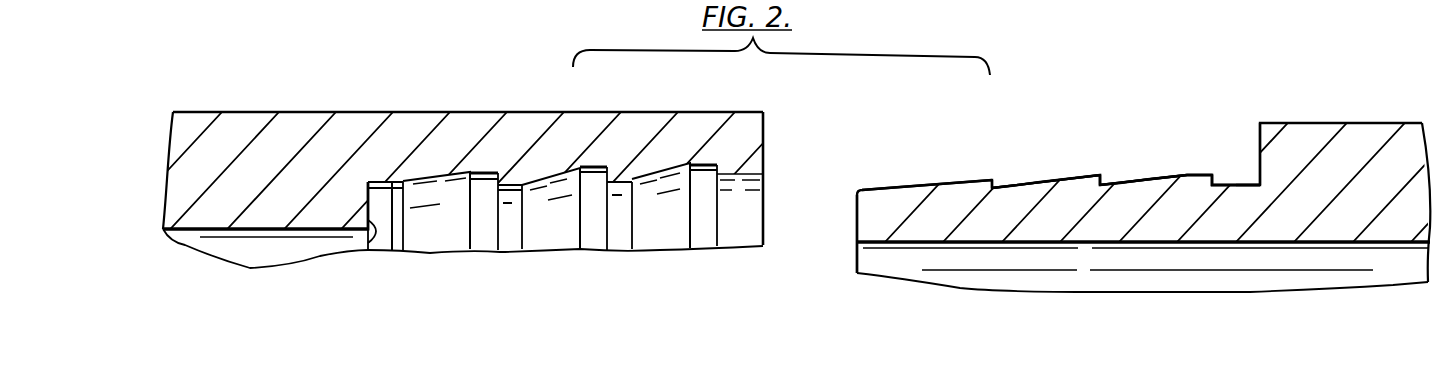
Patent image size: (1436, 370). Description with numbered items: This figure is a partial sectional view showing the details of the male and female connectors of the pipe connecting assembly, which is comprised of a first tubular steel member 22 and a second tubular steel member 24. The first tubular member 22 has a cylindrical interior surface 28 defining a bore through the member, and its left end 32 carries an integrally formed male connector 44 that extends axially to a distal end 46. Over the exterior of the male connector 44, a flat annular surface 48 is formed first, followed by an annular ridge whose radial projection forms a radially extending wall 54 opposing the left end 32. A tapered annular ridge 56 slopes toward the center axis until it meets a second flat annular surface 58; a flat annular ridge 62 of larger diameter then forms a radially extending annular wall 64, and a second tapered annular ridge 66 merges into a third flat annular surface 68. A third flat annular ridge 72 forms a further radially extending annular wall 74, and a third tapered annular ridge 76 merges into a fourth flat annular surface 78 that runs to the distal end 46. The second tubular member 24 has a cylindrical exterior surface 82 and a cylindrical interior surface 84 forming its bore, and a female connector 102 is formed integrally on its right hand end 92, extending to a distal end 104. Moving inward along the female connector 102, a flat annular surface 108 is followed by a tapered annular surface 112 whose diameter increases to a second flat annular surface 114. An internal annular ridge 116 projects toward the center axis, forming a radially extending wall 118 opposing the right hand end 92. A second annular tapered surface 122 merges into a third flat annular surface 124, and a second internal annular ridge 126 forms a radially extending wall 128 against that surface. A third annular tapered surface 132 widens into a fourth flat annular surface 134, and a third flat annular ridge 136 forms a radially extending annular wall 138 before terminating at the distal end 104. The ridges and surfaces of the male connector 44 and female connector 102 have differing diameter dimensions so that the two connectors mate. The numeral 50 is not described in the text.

The first tubular steel member 22 is at (1367, 123).
The second tubular steel member 24 is at (470, 162).
The cylindrical interior surface 28 is at (1345, 245).
The left end 32 is at (1256, 128).
The male connector 44 is at (1145, 118).
The distal end 46 is at (857, 220).
The flat annular surface 48 is at (1240, 183).
The land 50 is at (1198, 173).
The radially extending wall 54 is at (1220, 180).
The tapered annular ridge 56 is at (1157, 183).
The second flat annular surface 58 is at (1120, 182).
The flat annular ridge 62 is at (1100, 176).
The radially extending annular wall 64 is at (1112, 186).
The second tapered annular ridge 66 is at (1058, 180).
The third flat annular surface 68 is at (1008, 192).
The third flat annular ridge 72 is at (992, 180).
The radially extending annular wall 74 is at (1000, 190).
The third tapered annular ridge 76 is at (937, 185).
The fourth flat annular surface 78 is at (880, 188).
The cylindrical exterior surface 82 is at (212, 112).
The cylindrical interior surface 84 is at (200, 235).
The right hand end 92 is at (370, 250).
The female connector 102 is at (544, 163).
The distal end 104 is at (766, 147).
The flat annular surface 108 is at (387, 252).
The tapered annular surface 112 is at (432, 253).
The second flat annular surface 114 is at (482, 254).
The internal annular ridge 116 is at (508, 256).
The radially extending wall 118 is at (478, 202).
The second annular tapered surface 122 is at (552, 246).
The third flat annular surface 124 is at (593, 243).
The second internal annular ridge 126 is at (620, 243).
The radially extending wall 128 is at (600, 176).
The third annular tapered surface 132 is at (677, 243).
The fourth flat annular surface 134 is at (703, 240).
The third flat annular ridge 136 is at (758, 207).
The radially extending annular wall 138 is at (712, 173).